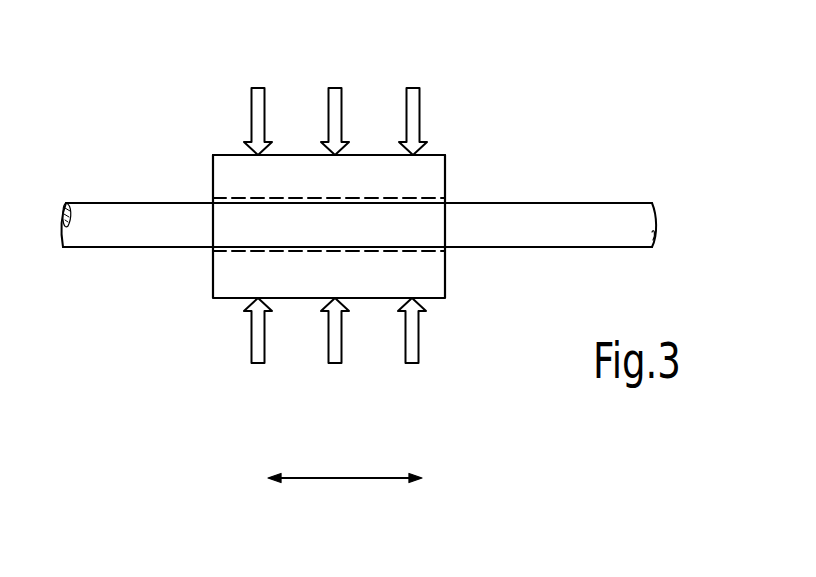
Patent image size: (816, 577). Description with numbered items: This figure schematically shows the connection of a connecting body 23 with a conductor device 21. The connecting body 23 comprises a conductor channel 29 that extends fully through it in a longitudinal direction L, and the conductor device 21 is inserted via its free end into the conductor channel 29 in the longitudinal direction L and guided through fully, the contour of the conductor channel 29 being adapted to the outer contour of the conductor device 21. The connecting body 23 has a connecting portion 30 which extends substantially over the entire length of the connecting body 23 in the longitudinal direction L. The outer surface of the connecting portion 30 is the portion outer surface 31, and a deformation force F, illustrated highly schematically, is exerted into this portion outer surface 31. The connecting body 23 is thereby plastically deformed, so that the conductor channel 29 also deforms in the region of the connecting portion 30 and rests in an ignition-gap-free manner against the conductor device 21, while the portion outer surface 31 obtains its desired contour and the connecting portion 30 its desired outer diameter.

The conductor device 21 is at (570, 215).
The connecting body 23 is at (429, 178).
The conductor channel 29 is at (258, 253).
The connecting portion 30 is at (298, 119).
The portion outer surface 31 is at (367, 153).
The deformation force F is at (249, 118).
The longitudinal direction L is at (335, 480).